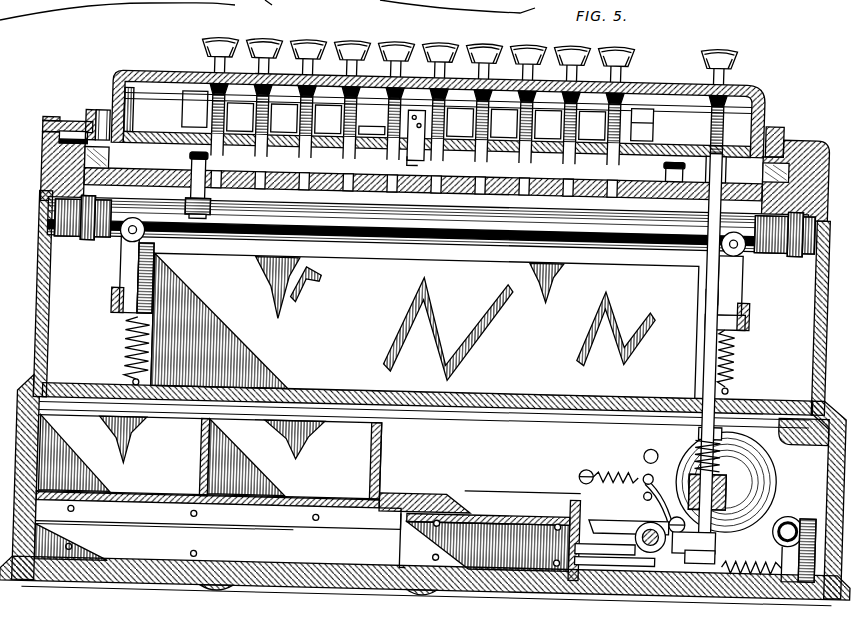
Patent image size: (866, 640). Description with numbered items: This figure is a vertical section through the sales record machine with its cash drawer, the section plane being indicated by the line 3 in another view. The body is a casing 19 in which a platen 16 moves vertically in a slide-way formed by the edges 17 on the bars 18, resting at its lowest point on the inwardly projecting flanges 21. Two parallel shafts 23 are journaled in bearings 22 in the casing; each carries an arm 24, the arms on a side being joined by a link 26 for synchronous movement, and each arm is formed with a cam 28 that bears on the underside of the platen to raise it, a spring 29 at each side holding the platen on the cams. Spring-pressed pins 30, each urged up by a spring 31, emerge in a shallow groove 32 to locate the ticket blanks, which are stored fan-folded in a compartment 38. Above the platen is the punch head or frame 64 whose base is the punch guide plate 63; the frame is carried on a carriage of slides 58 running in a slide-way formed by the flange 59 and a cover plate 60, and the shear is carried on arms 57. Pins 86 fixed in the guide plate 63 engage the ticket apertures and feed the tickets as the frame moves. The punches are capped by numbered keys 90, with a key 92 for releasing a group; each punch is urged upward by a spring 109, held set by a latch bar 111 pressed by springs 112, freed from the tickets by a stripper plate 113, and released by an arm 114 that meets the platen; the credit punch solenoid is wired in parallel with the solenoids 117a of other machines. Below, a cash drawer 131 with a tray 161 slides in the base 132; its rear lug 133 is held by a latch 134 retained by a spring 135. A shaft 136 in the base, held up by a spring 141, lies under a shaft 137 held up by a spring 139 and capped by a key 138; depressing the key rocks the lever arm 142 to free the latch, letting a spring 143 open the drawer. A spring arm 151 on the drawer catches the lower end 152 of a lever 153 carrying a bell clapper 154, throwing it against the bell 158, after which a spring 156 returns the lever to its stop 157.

The section line 3- 3 is at (343, 602).
The platen 16 is at (458, 218).
The edges 17 is at (92, 166).
The bars 18 is at (80, 160).
The casing 19 is at (49, 313).
The flanges 21 is at (80, 190).
The bearings 22 is at (70, 245).
The shafts 23 is at (493, 226).
The arm 24 is at (130, 255).
The link 26 is at (113, 297).
The cam 28 is at (140, 186).
The spring 29 is at (127, 352).
The pins 30 is at (207, 208).
The spring 31 is at (207, 220).
The groove 32 is at (201, 168).
The compartment 38 is at (544, 326).
The arms 57 is at (96, 118).
The slides 58 is at (62, 140).
The flange 59 is at (54, 145).
The cover plate 60 is at (52, 125).
The punch guide plate 63 is at (172, 140).
The frame 64 is at (652, 86).
The pins 86 is at (187, 166).
The numbered keys 90 is at (262, 45).
The key 92 is at (210, 44).
The spring 109 is at (306, 134).
The latch bar 111 is at (374, 125).
The springs 112 is at (625, 111).
The stripper plate 113 is at (466, 152).
The arm 114 is at (402, 160).
The solenoids 117a is at (40, 128).
The cash drawer 131 is at (408, 494).
The base 132 is at (832, 476).
The lug 133 is at (642, 538).
The latch 134 is at (622, 516).
The spring 135 is at (750, 554).
The shaft 136 is at (712, 290).
The shaft 137 is at (721, 172).
The key 138 is at (724, 57).
The spring 139 is at (705, 116).
The spring 141 is at (726, 456).
The lever arm 142 is at (722, 533).
The spring 143 is at (794, 510).
The spring arm 151 is at (697, 530).
The lower end 152 is at (702, 556).
The lever 153 is at (650, 486).
The bell clapper 154 is at (660, 441).
The spring 156 is at (600, 470).
The stop 157 is at (649, 493).
The bell 158 is at (780, 490).
The tray 161 is at (387, 444).